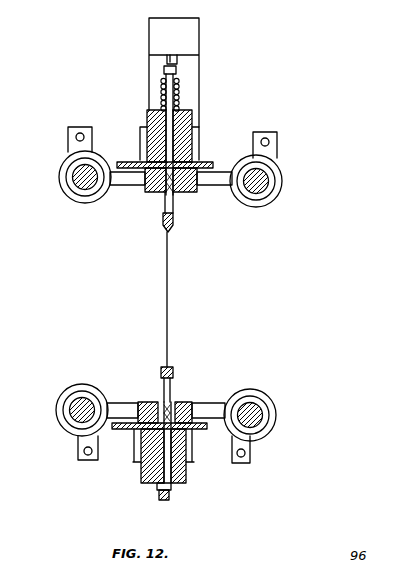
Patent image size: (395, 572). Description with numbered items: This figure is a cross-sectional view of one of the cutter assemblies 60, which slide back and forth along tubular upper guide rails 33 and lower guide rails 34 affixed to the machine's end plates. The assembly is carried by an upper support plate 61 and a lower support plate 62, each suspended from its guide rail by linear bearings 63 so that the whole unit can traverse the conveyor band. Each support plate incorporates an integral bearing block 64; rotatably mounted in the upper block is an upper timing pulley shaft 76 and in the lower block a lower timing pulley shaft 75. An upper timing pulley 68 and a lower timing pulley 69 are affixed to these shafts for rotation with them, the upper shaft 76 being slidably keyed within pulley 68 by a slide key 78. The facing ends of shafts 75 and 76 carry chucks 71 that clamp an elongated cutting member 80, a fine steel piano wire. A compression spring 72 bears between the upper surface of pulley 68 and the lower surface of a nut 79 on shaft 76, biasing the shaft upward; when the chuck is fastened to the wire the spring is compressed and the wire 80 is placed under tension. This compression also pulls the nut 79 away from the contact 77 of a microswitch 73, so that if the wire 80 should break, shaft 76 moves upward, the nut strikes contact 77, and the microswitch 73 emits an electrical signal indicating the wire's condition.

The upper guide rail 33 is at (86, 185).
The lower guide rail 34 is at (76, 410).
The cutter assembly 60 is at (275, 97).
The upper support plate 61 is at (282, 173).
The lower support plate 62 is at (278, 419).
The linear bearing 63 is at (63, 186).
The bearing block 64 is at (196, 200).
The upper timing pulley 68 is at (183, 126).
The lower timing pulley 69 is at (176, 484).
The chuck 71 is at (165, 232).
The compression spring 72 is at (181, 96).
The microswitch 73 is at (188, 35).
The lower timing pulley shaft 75 is at (173, 394).
The upper timing pulley shaft 76 is at (178, 213).
The contact 77 is at (176, 60).
The slide key 78 is at (199, 153).
The nut 79 is at (165, 80).
The cutting member 80 is at (167, 308).